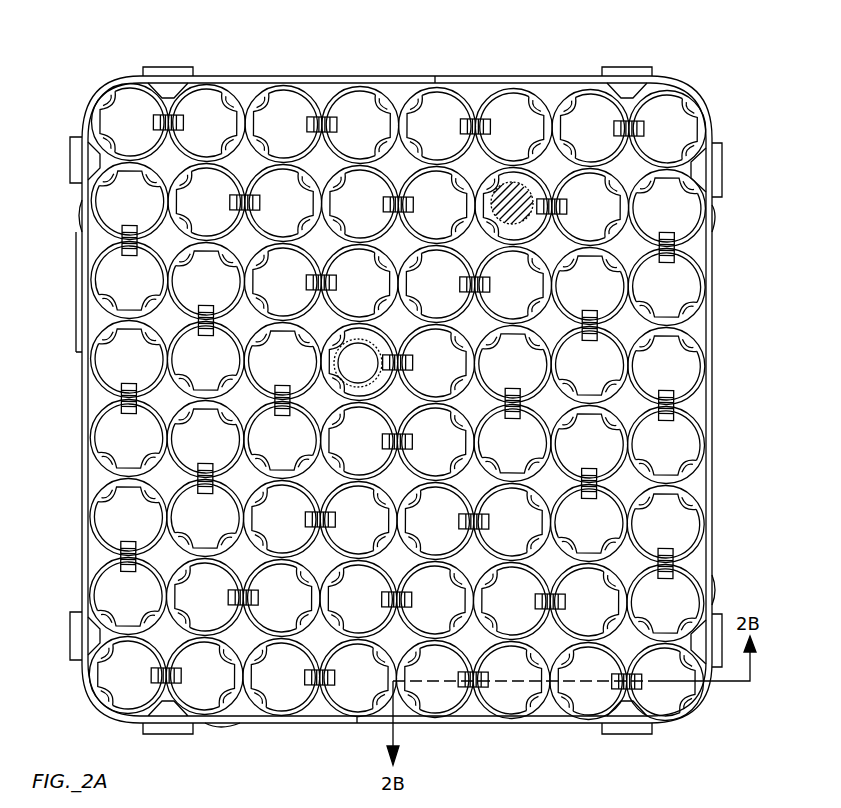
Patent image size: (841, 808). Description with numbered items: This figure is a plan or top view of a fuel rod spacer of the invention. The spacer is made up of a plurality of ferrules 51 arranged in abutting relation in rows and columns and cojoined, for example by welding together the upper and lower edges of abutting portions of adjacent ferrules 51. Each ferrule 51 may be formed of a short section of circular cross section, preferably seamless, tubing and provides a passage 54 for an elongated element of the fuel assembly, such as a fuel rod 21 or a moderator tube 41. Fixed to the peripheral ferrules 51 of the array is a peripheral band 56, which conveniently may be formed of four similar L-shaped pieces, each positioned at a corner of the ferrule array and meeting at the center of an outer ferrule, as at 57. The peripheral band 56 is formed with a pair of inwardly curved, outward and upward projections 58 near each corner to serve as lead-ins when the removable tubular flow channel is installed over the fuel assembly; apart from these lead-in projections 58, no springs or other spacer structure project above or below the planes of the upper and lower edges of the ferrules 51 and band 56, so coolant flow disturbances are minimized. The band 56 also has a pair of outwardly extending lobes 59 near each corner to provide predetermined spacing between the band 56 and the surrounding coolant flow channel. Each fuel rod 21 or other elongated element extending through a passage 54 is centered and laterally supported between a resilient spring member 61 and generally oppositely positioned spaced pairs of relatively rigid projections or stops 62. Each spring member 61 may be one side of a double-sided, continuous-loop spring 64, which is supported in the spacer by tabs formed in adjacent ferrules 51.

The fuel rod 21 is at (512, 183).
The moderator tube 41 is at (332, 359).
The ferrule 51 is at (490, 104).
The passage 54 is at (530, 188).
The peripheral band 56 is at (84, 518).
The meeting point of L-shaped band pieces 57 is at (80, 354).
The lead-in projection 58 is at (72, 640).
The lobe 59 is at (395, 732).
The spring member 61 is at (305, 115).
The stop 62 is at (282, 90).
The double-sided continuous-loop spring 64 is at (338, 126).